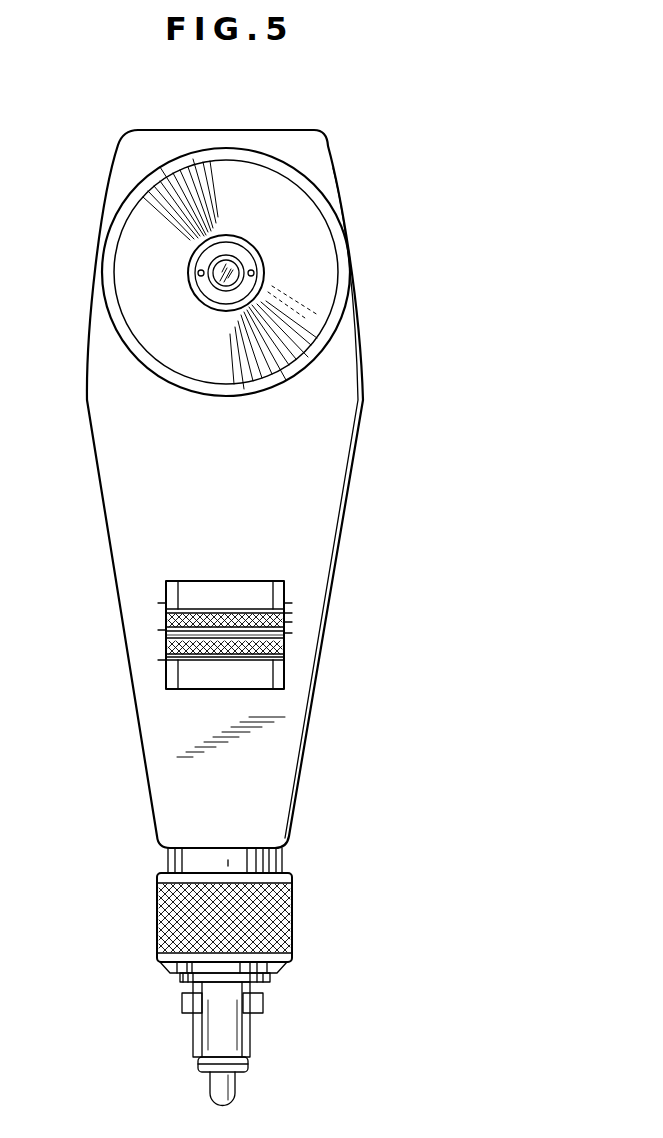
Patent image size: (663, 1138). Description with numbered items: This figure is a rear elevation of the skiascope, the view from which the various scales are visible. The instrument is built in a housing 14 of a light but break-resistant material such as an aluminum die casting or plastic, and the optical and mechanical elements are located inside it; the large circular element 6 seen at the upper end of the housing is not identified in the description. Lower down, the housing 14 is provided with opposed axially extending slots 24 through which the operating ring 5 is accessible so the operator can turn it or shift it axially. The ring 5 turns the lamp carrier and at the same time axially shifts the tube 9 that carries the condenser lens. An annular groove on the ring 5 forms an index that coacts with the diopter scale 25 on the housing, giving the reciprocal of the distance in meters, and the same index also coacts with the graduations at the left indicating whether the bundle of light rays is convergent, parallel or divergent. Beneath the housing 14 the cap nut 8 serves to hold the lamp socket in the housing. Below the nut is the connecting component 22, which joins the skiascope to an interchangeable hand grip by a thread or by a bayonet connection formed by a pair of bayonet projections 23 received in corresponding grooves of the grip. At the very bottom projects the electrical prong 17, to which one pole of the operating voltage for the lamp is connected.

The housing 14 is at (102, 385).
The objective lens hub 6 is at (233, 267).
The axially extending slots 24 is at (168, 588).
The diopter scale 25 is at (160, 606).
The operating ring 5 is at (285, 642).
The tube 9 is at (187, 680).
The cap nut 8 is at (168, 905).
The bayonet projections 23 is at (182, 1002).
The connecting component 22 is at (223, 1010).
The electrical prong 17 is at (235, 1097).